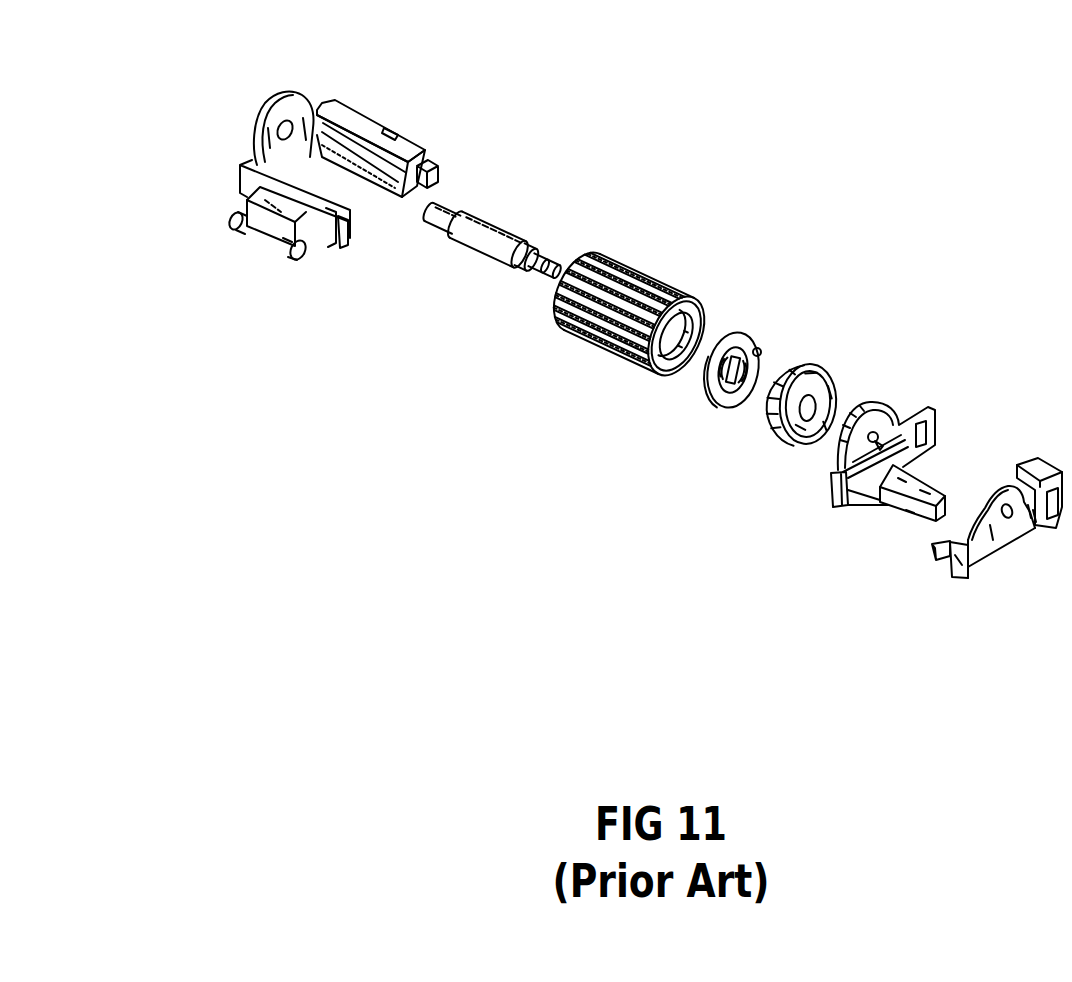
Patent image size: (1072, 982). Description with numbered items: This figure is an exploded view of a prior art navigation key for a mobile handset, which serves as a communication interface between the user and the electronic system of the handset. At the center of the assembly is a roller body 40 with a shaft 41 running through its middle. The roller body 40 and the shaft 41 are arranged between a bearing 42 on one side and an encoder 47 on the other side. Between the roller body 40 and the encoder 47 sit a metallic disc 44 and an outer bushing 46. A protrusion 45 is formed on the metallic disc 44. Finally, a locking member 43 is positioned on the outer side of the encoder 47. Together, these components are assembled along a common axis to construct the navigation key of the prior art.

The roller body 40 is at (660, 268).
The shaft 41 is at (497, 218).
The bearing 42 is at (278, 96).
The locking member 43 is at (995, 490).
The metallic disc 44 is at (720, 403).
The protrusion 45 is at (760, 349).
The outer bushing 46 is at (806, 364).
The encoder 47 is at (873, 395).